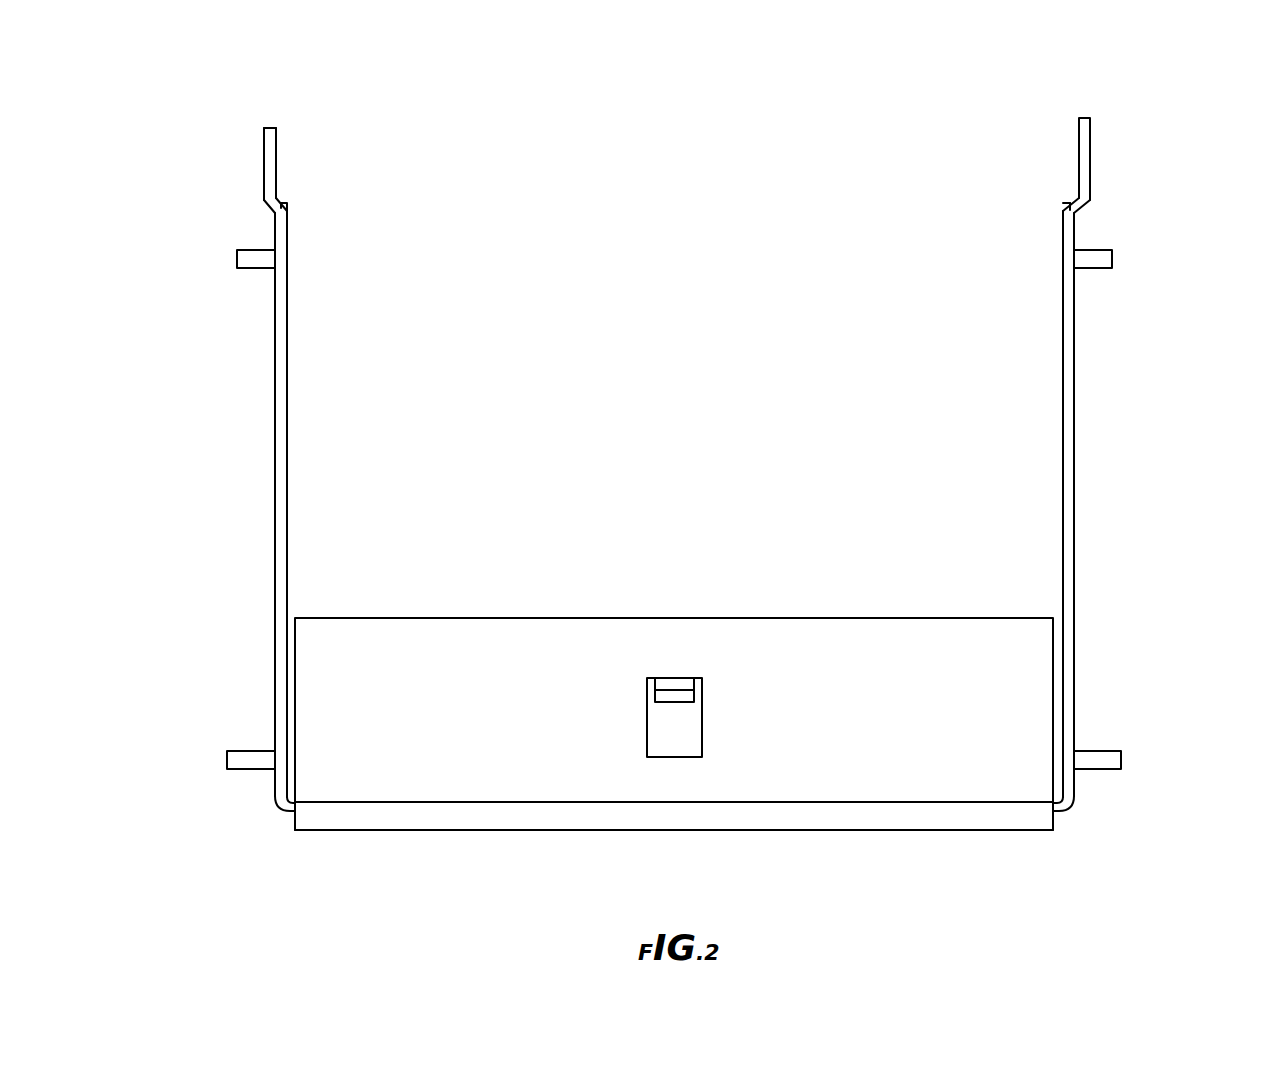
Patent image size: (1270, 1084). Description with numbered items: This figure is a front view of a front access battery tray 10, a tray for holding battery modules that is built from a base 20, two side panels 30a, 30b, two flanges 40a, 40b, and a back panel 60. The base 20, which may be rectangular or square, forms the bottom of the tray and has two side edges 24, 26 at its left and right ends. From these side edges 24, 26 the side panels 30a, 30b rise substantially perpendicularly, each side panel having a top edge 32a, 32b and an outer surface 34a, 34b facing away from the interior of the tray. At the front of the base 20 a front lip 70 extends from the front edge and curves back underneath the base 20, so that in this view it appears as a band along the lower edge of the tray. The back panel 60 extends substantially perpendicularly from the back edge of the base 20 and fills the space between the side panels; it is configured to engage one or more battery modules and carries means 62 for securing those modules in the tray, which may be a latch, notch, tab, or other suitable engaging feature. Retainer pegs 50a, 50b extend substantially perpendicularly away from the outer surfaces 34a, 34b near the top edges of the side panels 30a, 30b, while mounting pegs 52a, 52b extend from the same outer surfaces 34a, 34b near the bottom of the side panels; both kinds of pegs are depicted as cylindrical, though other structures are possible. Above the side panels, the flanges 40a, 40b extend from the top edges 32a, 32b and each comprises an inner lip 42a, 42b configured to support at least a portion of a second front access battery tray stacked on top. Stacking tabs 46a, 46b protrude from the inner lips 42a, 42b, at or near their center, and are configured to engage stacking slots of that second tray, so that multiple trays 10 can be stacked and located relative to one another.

The front access battery tray 10 is at (162, 100).
The base 20 is at (423, 802).
The side edge 24 is at (280, 810).
The side edge 26 is at (1052, 792).
The side panel 30a is at (1063, 432).
The side panel 30b is at (287, 437).
The top edge 32a is at (1080, 212).
The top edge 32b is at (272, 211).
The outer surface 34a is at (1074, 497).
The outer surface 34b is at (275, 512).
The flange 40a is at (1084, 116).
The flange 40b is at (272, 126).
The inner lip 42a is at (1063, 218).
The inner lip 42b is at (288, 208).
The stacking tab 46a is at (1065, 202).
The stacking tab 46b is at (284, 204).
The retainer peg 50a is at (1112, 268).
The retainer peg 50b is at (237, 258).
The mounting peg 52a is at (1122, 758).
The mounting peg 52b is at (227, 760).
The back panel 60 is at (772, 618).
The means for securing battery modules 62 is at (676, 702).
The front lip 70 is at (760, 830).